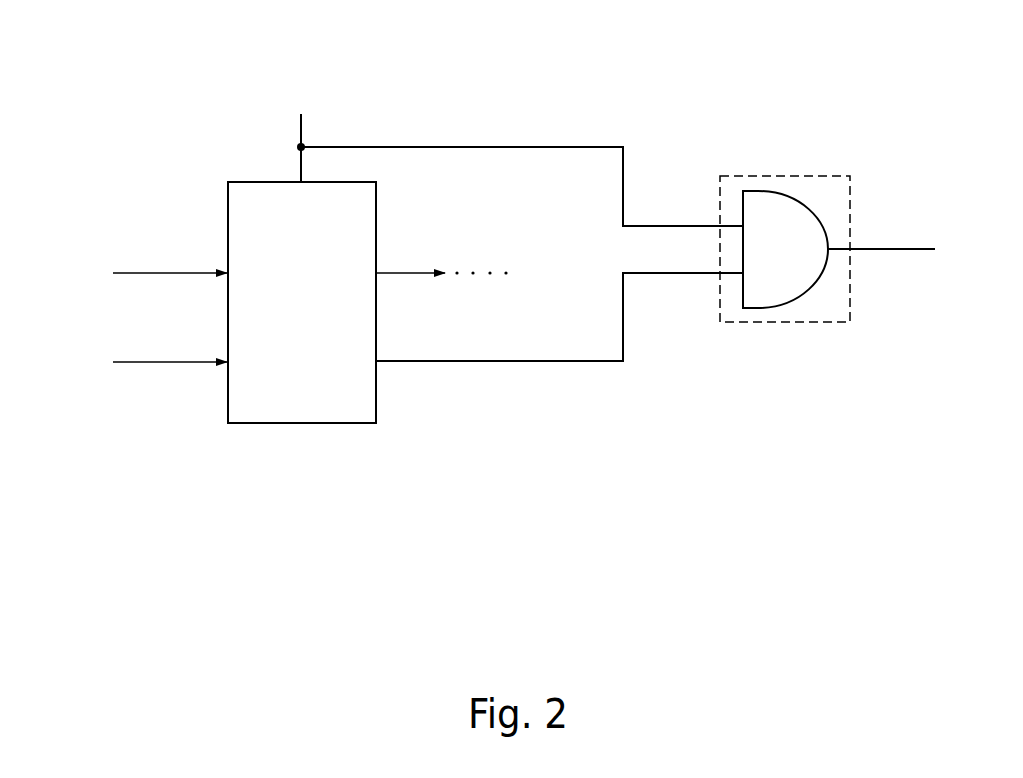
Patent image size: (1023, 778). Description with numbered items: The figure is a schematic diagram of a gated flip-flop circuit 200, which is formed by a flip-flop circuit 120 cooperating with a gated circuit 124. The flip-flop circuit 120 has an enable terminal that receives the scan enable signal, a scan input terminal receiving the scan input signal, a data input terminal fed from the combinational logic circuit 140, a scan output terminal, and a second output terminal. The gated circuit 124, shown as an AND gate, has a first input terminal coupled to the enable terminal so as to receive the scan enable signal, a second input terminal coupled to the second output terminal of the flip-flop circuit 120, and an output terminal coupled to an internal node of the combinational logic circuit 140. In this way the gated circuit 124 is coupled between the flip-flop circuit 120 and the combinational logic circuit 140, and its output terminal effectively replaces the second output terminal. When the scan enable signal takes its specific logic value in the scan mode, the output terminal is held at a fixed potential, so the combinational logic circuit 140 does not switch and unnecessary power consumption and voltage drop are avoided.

The gated flip-flop circuit 200 is at (88, 57).
The flip-flop circuit 120 is at (376, 198).
The gated circuit 124 is at (850, 198).
The combinational logic circuit 140 is at (190, 350).